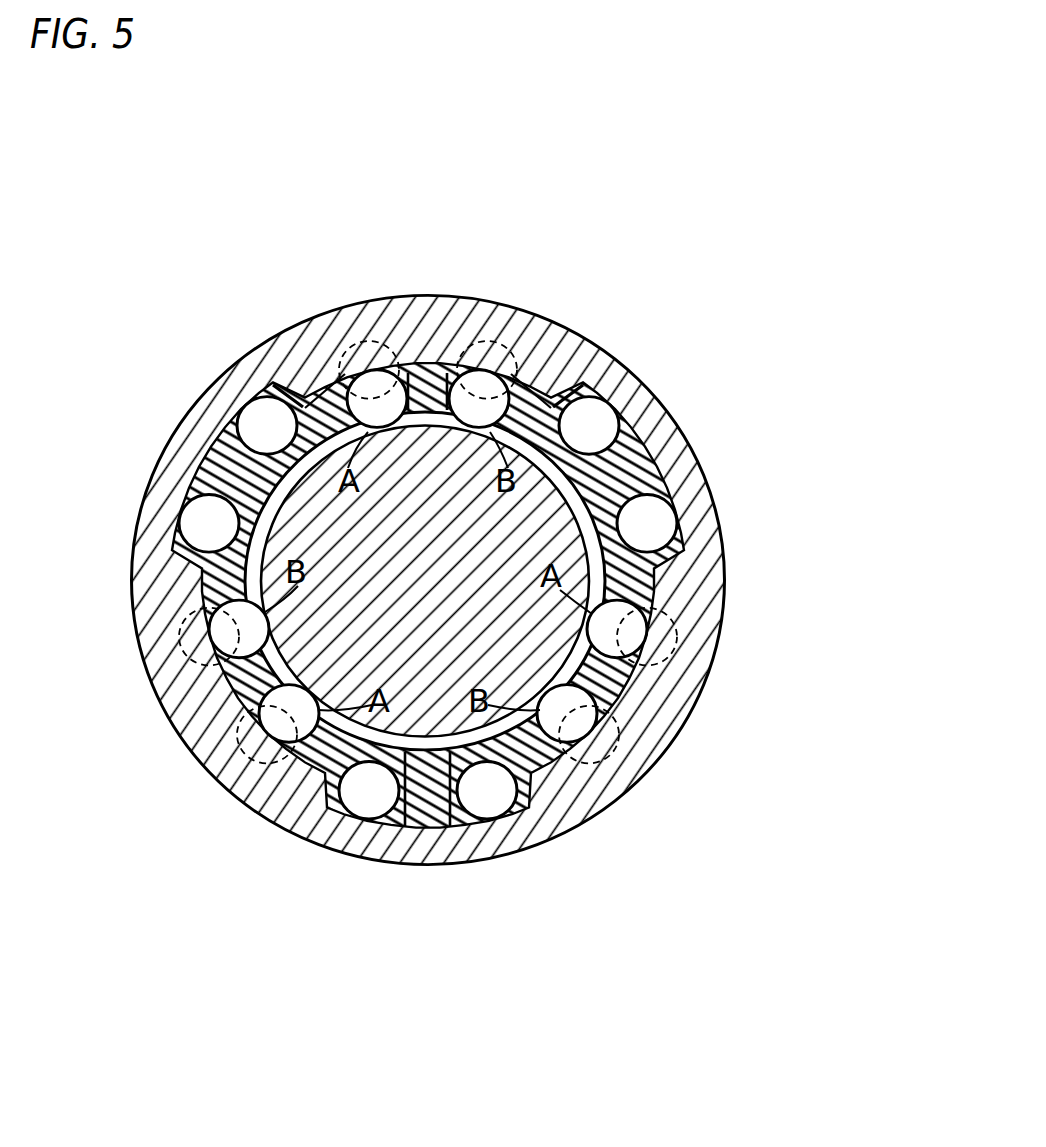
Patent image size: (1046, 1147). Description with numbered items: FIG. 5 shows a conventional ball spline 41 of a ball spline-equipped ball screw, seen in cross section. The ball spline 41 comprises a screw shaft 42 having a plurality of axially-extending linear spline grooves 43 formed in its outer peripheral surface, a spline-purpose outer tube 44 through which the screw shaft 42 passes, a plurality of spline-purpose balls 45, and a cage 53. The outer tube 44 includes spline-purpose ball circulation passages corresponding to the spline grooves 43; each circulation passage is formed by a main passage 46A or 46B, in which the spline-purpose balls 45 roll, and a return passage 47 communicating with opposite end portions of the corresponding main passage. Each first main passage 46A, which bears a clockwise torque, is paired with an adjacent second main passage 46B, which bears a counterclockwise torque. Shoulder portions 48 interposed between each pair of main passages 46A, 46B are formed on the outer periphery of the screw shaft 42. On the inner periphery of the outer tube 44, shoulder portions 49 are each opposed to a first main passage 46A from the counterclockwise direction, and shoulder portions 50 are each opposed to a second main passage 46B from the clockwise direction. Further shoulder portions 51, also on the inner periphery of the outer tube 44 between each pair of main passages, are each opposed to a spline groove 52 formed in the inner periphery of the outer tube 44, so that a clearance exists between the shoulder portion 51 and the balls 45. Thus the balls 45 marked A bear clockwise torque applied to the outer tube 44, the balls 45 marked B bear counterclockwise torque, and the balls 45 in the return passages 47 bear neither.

The ball spline 41 is at (741, 398).
The screw shaft 42 is at (452, 790).
The spline grooves 43 is at (385, 428).
The spline-purpose outer tube 44 is at (700, 506).
The spline-purpose balls 45 is at (365, 372).
The first main passage 46A is at (300, 394).
The second main passage 46B is at (560, 390).
The return passages 47 is at (258, 398).
The shoulder portions 48 is at (430, 420).
The shoulder portions 49 is at (335, 388).
The shoulder portions 50 is at (500, 362).
The shoulder portions 51 is at (428, 372).
The spline groove 52 is at (378, 352).
The cage 53 is at (407, 827).